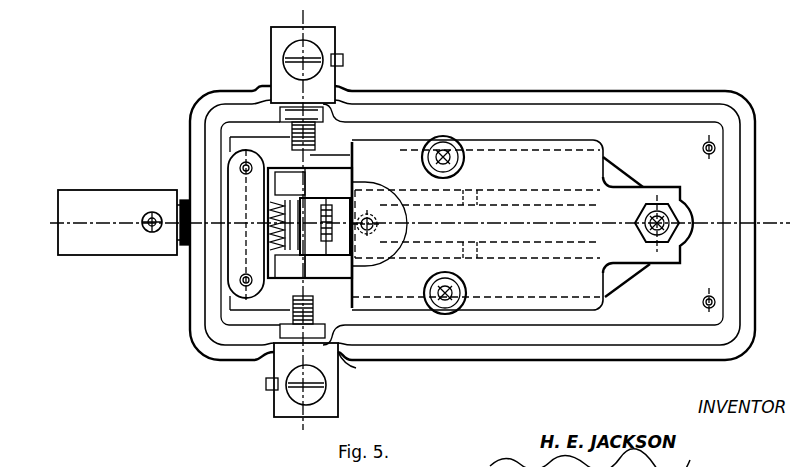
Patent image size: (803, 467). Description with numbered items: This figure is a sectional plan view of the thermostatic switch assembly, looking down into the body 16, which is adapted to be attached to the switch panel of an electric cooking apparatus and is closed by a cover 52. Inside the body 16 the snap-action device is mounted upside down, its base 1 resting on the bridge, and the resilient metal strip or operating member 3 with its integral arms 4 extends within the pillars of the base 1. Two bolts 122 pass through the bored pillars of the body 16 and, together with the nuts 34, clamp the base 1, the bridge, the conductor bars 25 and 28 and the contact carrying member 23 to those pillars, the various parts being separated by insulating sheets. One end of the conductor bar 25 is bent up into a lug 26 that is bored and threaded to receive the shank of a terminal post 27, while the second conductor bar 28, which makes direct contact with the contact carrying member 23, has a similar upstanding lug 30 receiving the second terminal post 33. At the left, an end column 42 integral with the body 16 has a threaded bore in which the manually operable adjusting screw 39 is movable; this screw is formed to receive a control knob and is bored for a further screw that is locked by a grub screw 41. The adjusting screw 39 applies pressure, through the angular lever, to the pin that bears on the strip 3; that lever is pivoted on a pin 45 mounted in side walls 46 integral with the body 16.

The base 1 is at (543, 158).
The resilient metal strip or operating member 3 is at (616, 285).
The arms 4 is at (633, 193).
The body 16 is at (610, 100).
The contact carrying member 23 is at (614, 176).
The conductor bar 25 is at (354, 150).
The upstanding lug 26 is at (340, 87).
The terminal post 27 is at (325, 38).
The conductor bar 28 is at (358, 298).
The upstanding lug 30 is at (340, 368).
The second terminal post 33 is at (332, 402).
The nuts 34 is at (457, 170).
The manually operable adjusting screw 39 is at (172, 170).
The grub screw 41 is at (148, 234).
The end column 42 is at (240, 254).
The pin 45 is at (250, 100).
The side walls 46 is at (552, 198).
The cover 52 is at (532, 113).
The bolts 122 is at (453, 147).